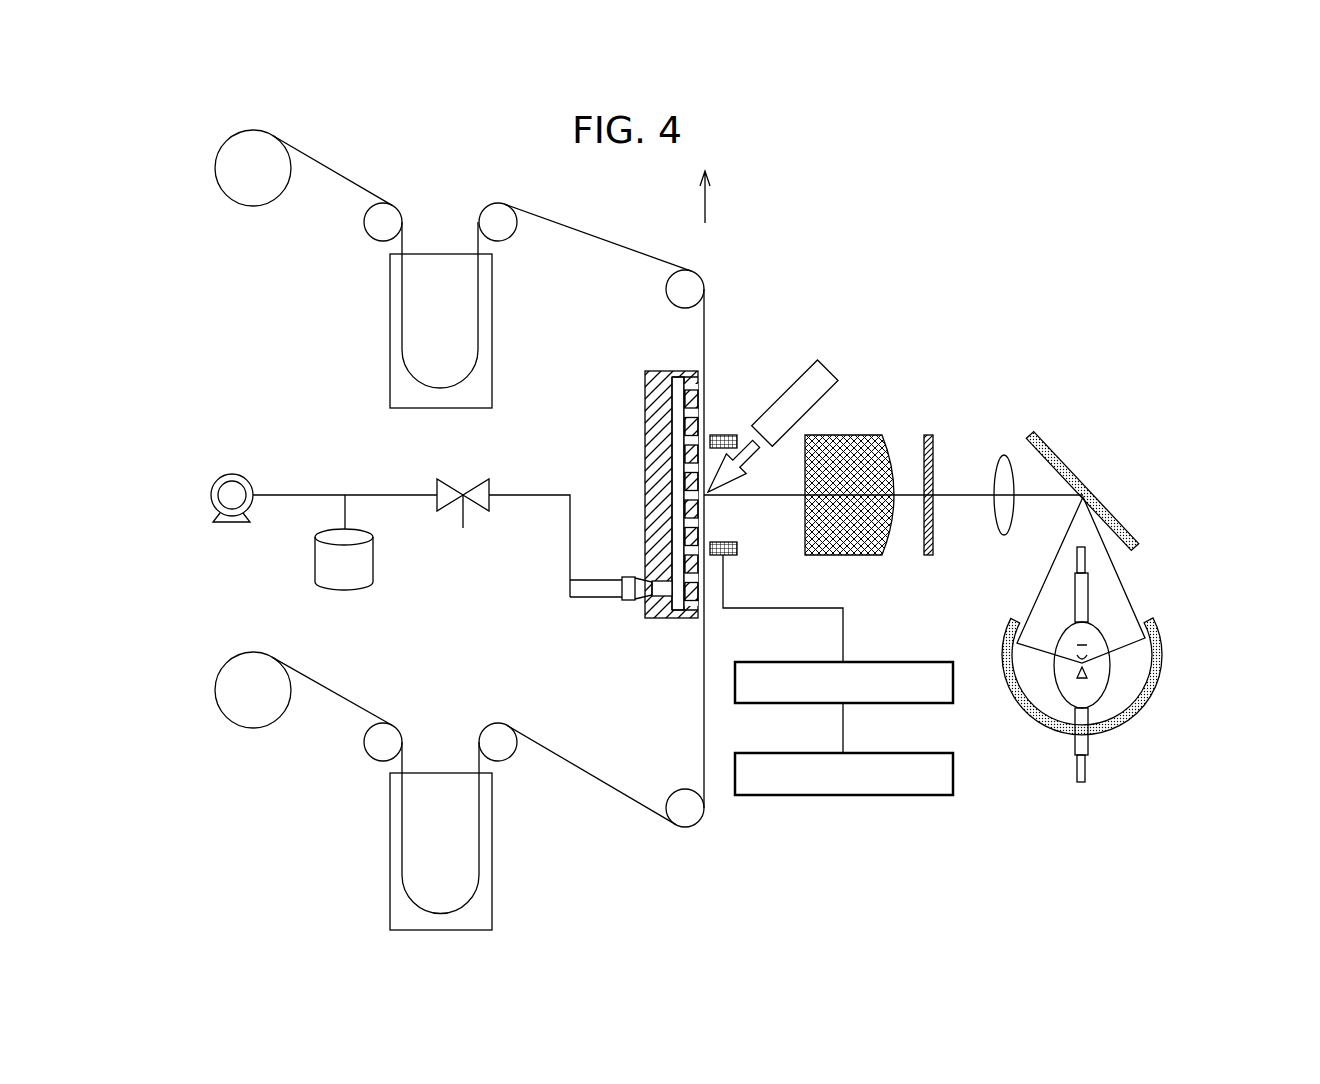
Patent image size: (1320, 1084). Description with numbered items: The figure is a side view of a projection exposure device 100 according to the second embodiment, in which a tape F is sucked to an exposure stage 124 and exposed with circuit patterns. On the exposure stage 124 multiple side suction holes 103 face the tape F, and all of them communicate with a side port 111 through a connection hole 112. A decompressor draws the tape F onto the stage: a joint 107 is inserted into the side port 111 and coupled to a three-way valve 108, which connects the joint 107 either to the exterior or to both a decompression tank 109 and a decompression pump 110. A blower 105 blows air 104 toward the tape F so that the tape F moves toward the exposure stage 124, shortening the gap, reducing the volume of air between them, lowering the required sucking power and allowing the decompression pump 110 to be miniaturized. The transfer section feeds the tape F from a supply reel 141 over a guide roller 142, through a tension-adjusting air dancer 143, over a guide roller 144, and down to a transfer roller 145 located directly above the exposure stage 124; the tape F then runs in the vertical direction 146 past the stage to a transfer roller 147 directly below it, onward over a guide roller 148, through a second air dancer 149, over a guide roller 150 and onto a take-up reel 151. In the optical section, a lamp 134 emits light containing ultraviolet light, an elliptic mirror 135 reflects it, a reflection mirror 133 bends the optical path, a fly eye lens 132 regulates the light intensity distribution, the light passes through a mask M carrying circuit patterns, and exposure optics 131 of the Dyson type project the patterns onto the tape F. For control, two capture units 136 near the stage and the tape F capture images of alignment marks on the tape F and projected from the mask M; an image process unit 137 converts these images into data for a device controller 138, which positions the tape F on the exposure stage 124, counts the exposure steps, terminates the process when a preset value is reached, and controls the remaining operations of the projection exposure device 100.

The projection exposure device 100 is at (995, 163).
The side suction holes 103 is at (693, 438).
The air 104 is at (745, 466).
The blower 105 is at (795, 382).
The joint 107 is at (632, 602).
The three-way valve 108 is at (447, 479).
The decompression tank 109 is at (373, 575).
The decompression pump 110 is at (225, 475).
The side port 111 is at (662, 592).
The connection hole 112 is at (678, 518).
The exposure stage 124 is at (635, 510).
The exposure optics 131 is at (872, 435).
The fly eye lens 132 is at (1003, 535).
The reflection mirror 133 is at (1073, 472).
The lamp 134 is at (1087, 597).
The elliptic mirror 135 is at (1160, 653).
The capture units 136 is at (725, 435).
The image process unit 137 is at (930, 662).
The device controller 138 is at (953, 772).
The supply reel 141 is at (222, 188).
The guide roller 142 is at (370, 232).
The air dancer 143 is at (392, 338).
The guide roller 144 is at (488, 210).
The transfer roller 145 is at (690, 282).
The vertical direction 146 is at (707, 198).
The transfer roller 147 is at (690, 826).
The guide roller 148 is at (510, 753).
The air dancer 149 is at (492, 850).
The guide roller 150 is at (378, 753).
The take-up reel 151 is at (232, 722).
The tape F is at (707, 308).
The mask M is at (933, 458).